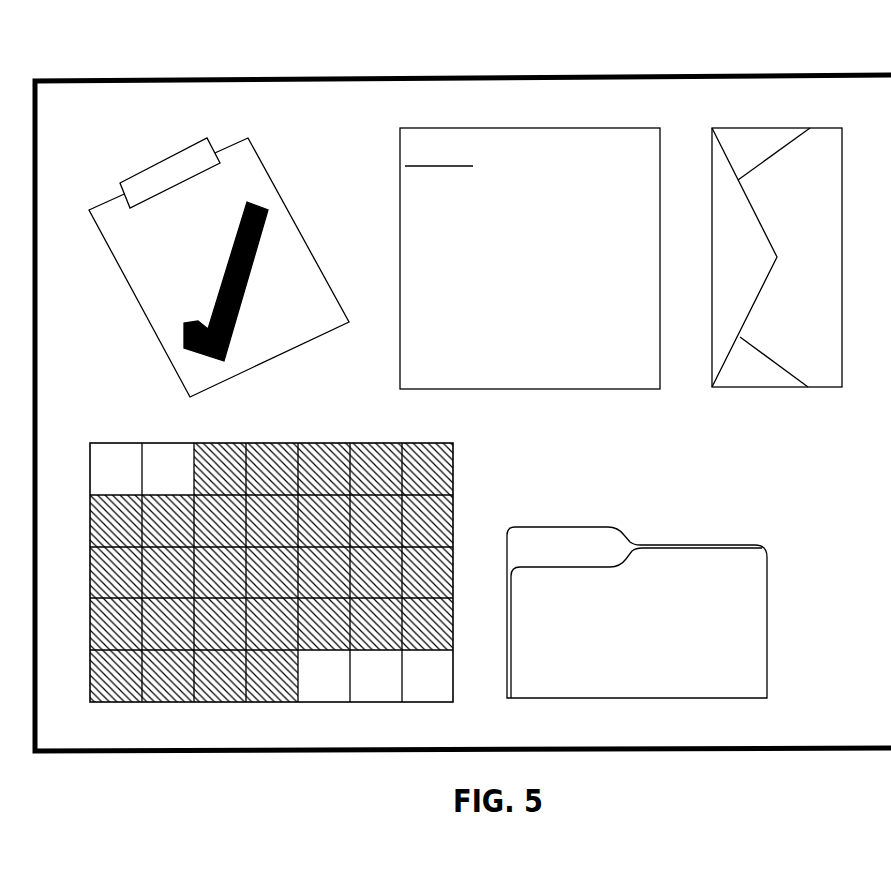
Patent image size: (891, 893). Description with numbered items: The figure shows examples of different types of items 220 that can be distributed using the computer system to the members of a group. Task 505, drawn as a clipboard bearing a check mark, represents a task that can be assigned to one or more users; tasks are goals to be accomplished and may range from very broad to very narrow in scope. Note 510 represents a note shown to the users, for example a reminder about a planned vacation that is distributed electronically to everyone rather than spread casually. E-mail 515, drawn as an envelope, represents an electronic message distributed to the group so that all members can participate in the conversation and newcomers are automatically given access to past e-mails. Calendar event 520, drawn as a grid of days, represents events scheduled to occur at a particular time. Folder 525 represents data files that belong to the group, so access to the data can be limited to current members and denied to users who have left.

The items 220 is at (72, 80).
The task 505 is at (160, 161).
The note 510 is at (440, 128).
The e-mail 515 is at (752, 128).
The calendar event 520 is at (130, 443).
The folder 525 is at (545, 527).